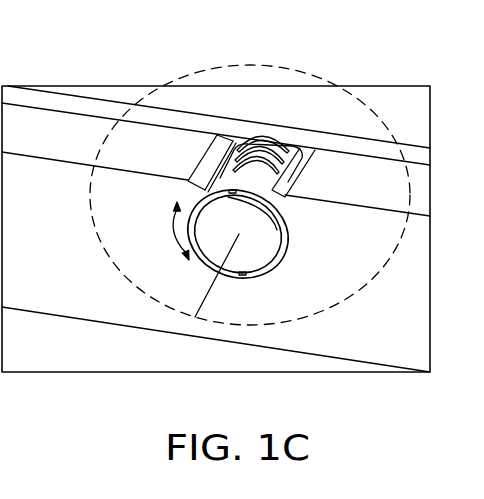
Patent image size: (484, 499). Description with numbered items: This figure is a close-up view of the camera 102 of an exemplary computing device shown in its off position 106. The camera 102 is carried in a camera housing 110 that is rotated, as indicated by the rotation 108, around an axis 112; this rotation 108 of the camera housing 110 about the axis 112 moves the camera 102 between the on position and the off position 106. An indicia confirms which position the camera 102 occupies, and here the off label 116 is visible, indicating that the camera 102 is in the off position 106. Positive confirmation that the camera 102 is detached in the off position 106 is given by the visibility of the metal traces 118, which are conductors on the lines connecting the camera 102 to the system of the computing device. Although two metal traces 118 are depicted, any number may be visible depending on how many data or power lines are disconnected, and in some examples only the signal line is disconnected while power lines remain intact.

The camera 102 is at (300, 143).
The off position 106 is at (160, 85).
The rotation 108 is at (172, 232).
The camera housing 110 is at (280, 266).
The axis 112 is at (300, 140).
The off label 116 is at (214, 165).
The metal traces 118 is at (257, 163).